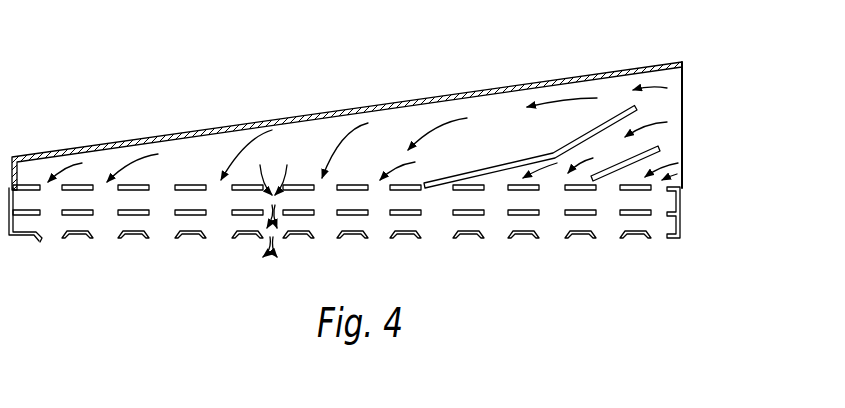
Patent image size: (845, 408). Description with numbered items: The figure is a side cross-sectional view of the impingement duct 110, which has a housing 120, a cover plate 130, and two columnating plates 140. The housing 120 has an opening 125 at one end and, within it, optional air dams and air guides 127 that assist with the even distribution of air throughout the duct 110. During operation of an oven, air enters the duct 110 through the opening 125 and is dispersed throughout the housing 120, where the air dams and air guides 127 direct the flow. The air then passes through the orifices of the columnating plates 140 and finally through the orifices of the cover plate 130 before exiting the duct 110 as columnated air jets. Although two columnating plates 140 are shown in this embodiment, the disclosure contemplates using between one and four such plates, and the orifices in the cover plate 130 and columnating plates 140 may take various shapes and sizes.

The impingement duct 110 is at (422, 160).
The housing 120 is at (368, 106).
The opening 125 is at (683, 110).
The air dams and air guides 127 is at (610, 118).
The cover plate 130 is at (632, 240).
The columnating plates 140 is at (683, 186).